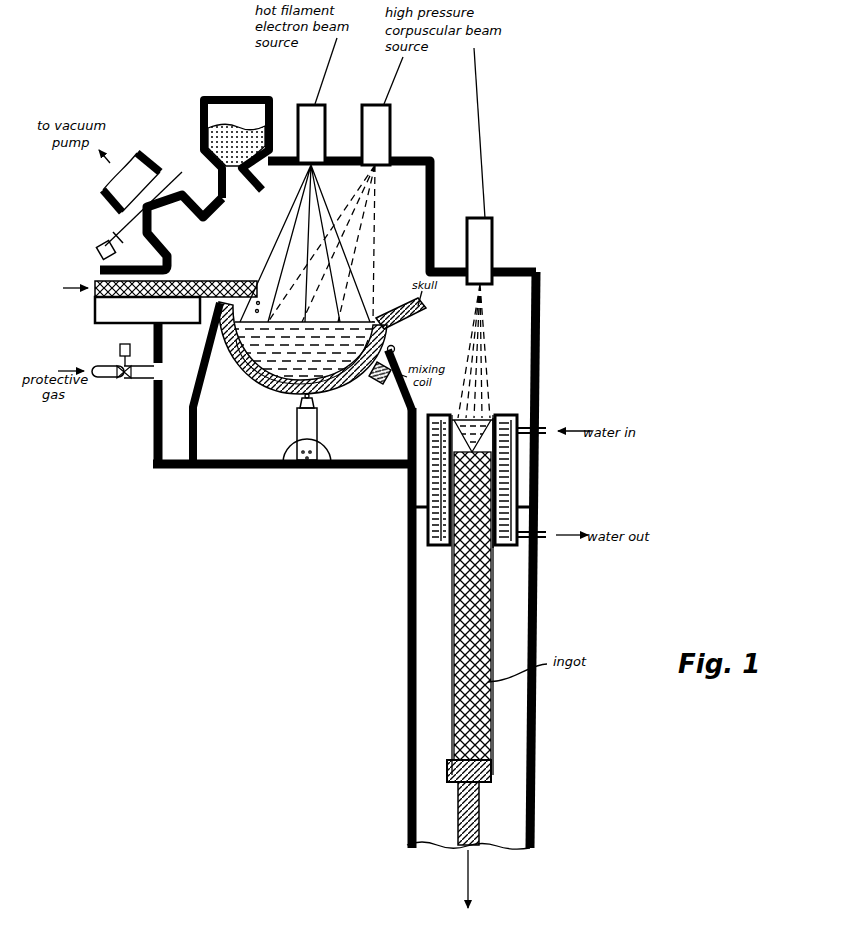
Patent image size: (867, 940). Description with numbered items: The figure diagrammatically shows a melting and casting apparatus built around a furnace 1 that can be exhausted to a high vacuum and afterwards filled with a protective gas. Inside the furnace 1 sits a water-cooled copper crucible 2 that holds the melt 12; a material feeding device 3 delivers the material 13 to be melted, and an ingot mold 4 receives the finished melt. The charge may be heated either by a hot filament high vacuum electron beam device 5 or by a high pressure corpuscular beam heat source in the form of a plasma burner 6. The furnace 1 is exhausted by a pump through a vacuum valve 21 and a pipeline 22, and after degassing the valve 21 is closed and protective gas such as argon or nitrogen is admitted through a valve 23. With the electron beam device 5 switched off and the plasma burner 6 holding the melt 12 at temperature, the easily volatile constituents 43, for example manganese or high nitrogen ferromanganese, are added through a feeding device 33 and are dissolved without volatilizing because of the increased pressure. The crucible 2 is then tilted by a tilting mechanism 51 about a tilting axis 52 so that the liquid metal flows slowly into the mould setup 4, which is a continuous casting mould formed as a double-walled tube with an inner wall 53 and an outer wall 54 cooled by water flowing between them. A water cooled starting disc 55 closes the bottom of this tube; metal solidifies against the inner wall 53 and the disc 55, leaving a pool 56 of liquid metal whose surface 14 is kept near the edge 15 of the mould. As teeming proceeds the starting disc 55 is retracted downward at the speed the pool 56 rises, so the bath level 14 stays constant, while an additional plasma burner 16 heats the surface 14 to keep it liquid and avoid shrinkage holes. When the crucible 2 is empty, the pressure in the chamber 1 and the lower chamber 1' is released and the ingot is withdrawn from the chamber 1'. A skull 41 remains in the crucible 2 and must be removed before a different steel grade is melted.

The furnace 1 is at (344, 331).
The chamber 1' is at (500, 560).
The water-cooled copper crucible 2 is at (244, 380).
The material feeding device 3 is at (173, 314).
The ingot mold 4 is at (505, 548).
The electron beam device 5 is at (308, 104).
The plasma burner 6 is at (384, 104).
The melt 12 is at (343, 386).
The material to be melted 13 is at (183, 283).
The bath level 14 is at (470, 412).
The edge of the mold 15 is at (507, 415).
The plasma burner 16 is at (482, 218).
The vacuum valve 21 is at (147, 209).
The pipeline 22 is at (137, 153).
The valve 23 is at (126, 383).
The feeding device 33 is at (226, 100).
The skull 41 is at (381, 322).
The easily volatile melt constituents 43 is at (213, 146).
The tilting mechanism 51 is at (318, 434).
The tilting axis 52 is at (395, 348).
The inner wall 53 is at (472, 480).
The outer wall 54 is at (429, 440).
The starting disc 55 is at (492, 770).
The pool 56 is at (491, 420).